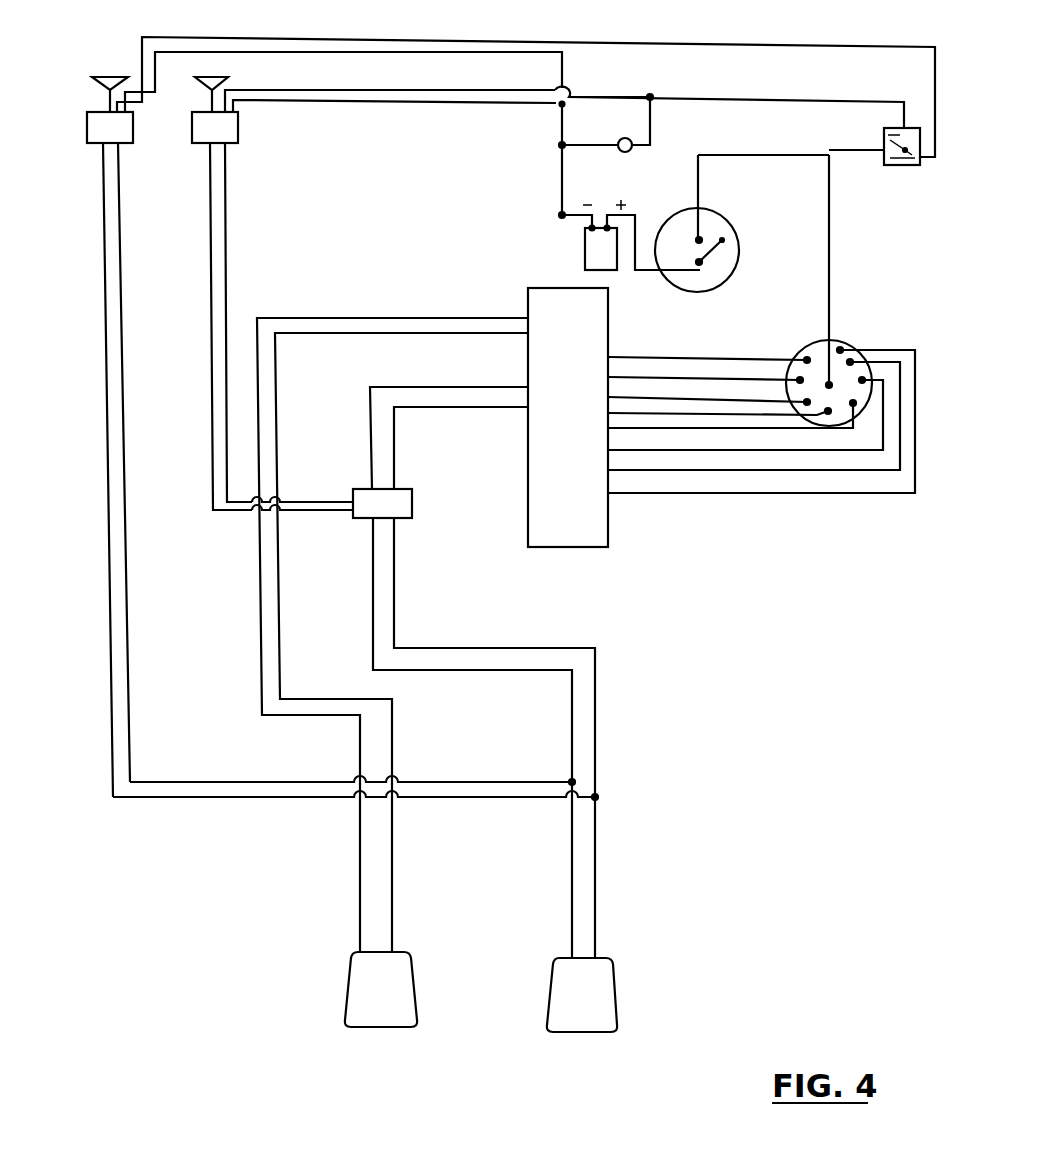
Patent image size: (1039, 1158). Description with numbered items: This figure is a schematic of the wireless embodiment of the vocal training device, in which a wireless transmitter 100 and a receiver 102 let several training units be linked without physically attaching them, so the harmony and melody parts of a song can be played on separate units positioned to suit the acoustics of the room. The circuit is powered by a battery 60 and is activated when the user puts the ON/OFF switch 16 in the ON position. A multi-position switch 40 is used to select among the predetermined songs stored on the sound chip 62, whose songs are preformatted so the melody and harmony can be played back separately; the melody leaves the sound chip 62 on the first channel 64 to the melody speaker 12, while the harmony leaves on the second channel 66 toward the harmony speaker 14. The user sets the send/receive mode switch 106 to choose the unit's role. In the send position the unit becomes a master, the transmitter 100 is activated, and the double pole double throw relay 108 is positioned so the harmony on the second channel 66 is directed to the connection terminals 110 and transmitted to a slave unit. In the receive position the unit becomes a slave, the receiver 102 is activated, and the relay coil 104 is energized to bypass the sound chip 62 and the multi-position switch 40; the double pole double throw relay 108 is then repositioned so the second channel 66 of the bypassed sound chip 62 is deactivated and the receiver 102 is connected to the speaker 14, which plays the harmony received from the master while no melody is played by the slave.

The wireless transmitter 100 is at (105, 77).
The receiver 102 is at (222, 68).
The relay coil 104 is at (632, 142).
The send/receive mode switch 106 is at (900, 166).
The ON/OFF switch 16 is at (730, 252).
The battery 60 is at (612, 272).
The sound chip 62 is at (610, 528).
The multi-position switch 40 is at (835, 343).
The channel 1 64 is at (312, 328).
The channel 2 66 is at (382, 400).
The double pole double throw relay 108 is at (368, 514).
The connection terminals 110 is at (604, 775).
The speaker 12 is at (350, 955).
The speaker 14 is at (605, 958).